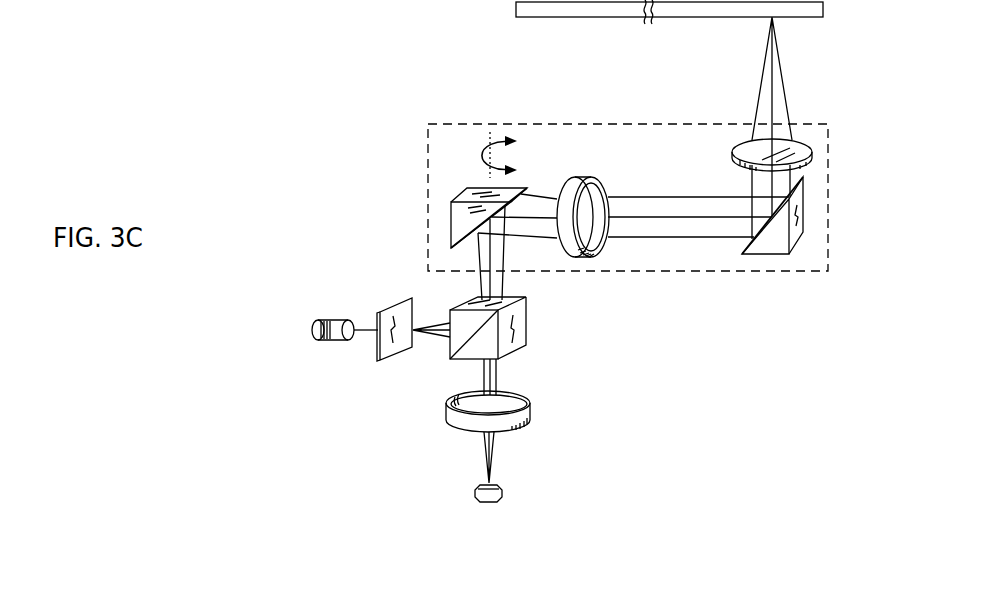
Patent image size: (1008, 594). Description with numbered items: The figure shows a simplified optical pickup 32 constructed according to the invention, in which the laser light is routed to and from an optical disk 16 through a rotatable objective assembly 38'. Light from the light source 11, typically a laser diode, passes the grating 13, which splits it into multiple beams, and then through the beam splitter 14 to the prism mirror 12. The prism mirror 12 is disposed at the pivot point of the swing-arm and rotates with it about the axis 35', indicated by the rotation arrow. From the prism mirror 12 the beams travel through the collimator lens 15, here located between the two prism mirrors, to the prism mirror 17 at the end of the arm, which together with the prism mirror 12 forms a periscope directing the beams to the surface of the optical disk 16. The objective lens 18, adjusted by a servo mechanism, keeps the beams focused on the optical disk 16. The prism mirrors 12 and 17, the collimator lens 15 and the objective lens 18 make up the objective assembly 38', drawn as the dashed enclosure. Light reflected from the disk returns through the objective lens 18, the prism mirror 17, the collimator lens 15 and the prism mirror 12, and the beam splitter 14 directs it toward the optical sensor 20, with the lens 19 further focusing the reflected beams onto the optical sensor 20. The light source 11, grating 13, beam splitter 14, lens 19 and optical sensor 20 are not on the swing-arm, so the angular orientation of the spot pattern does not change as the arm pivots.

The optical system 32 is at (338, 64).
The optical disk 16 is at (621, 18).
The objective lens 18 is at (813, 153).
The prism mirror 17 is at (775, 256).
The objective assembly 38' is at (672, 197).
The axis 35' is at (463, 141).
The prism mirror 12 is at (452, 226).
The collimator lens 15 is at (590, 256).
The grating 13 is at (397, 298).
The light source 11 is at (312, 322).
The beam splitter 14 is at (527, 322).
The lens 19 is at (531, 415).
The optical sensor 20 is at (503, 493).